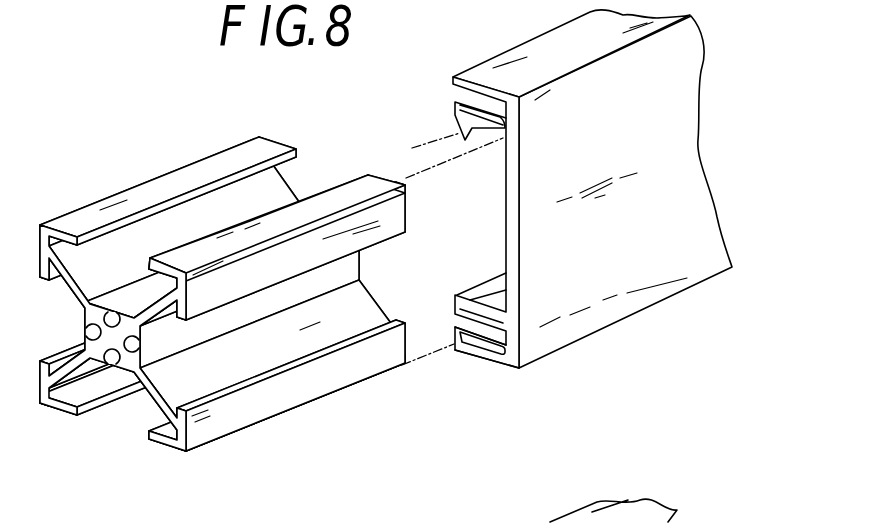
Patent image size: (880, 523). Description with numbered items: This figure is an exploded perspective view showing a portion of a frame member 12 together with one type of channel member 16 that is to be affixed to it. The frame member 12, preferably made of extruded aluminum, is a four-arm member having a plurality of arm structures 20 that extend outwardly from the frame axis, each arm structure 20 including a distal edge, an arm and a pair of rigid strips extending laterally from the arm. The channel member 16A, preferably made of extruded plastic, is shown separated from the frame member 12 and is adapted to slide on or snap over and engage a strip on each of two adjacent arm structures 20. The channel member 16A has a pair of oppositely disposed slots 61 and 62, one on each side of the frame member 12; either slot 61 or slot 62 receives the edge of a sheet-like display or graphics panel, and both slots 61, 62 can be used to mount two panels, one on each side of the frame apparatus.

The frame member 12 is at (203, 142).
The arm structure 20 is at (157, 271).
The channel member 16 is at (638, 335).
The channel member 16A is at (670, 143).
The slot 61 is at (457, 100).
The slot 62 is at (490, 334).